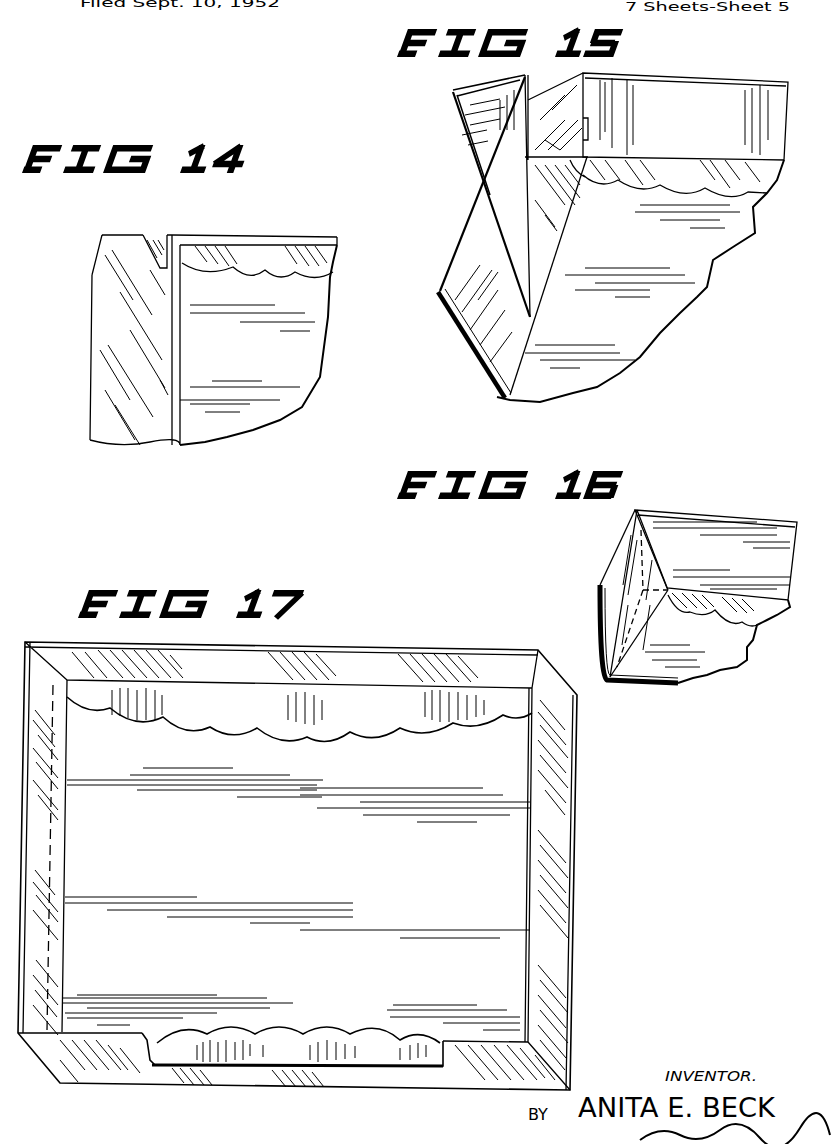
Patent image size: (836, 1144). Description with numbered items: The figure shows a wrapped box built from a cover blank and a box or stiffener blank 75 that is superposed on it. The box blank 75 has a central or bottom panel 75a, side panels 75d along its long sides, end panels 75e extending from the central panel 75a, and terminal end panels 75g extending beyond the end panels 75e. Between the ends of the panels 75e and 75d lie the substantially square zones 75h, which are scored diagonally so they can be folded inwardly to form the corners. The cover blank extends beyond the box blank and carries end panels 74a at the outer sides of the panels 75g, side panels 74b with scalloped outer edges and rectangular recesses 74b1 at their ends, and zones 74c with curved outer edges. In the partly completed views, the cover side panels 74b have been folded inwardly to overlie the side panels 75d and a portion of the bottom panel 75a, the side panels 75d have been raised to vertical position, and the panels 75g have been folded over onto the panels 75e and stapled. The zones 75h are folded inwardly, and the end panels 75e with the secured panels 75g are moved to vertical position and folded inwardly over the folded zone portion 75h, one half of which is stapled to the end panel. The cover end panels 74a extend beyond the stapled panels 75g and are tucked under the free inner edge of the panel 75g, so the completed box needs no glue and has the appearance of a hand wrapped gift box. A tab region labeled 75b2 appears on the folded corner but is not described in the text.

In FIG. 14, the end panel 74a is at (115, 428).
In FIG. 15, the end panel 74a is at (515, 245).
In FIG. 16, the end panel 74a is at (635, 620).
In FIG. 17, the end panel 74a is at (63, 847).
In FIG. 14, the side panel 74b is at (320, 257).
In FIG. 15, the side panel 74b is at (747, 177).
In FIG. 16, the side panel 74b is at (752, 610).
In FIG. 17, the side panel 74b is at (372, 725).
In FIG. 14, the zone 74c is at (160, 237).
In FIG. 15, the rectangular recess 74b1 is at (592, 128).
In FIG. 16, the box or stiffener blank 75 is at (600, 610).
In FIG. 14, the central panel 75a is at (300, 348).
In FIG. 15, the central panel 75a is at (683, 263).
In FIG. 16, the central panel 75a is at (720, 657).
In FIG. 17, the central panel 75a is at (350, 863).
In FIG. 15, the fold tab 75b2 is at (562, 145).
In FIG. 14, the side panel 75d is at (338, 240).
In FIG. 15, the side panel 75d is at (720, 100).
In FIG. 16, the side panel 75d is at (738, 518).
In FIG. 17, the side panel 75d is at (466, 625).
In FIG. 15, the end panel 75e is at (463, 348).
In FIG. 17, the end panel 75e is at (563, 763).
In FIG. 15, the terminal end panel 75g is at (468, 86).
In FIG. 16, the terminal end panel 75g is at (600, 583).
In FIG. 17, the terminal end panel 75g is at (43, 752).
In FIG. 15, the zone 75h is at (585, 178).